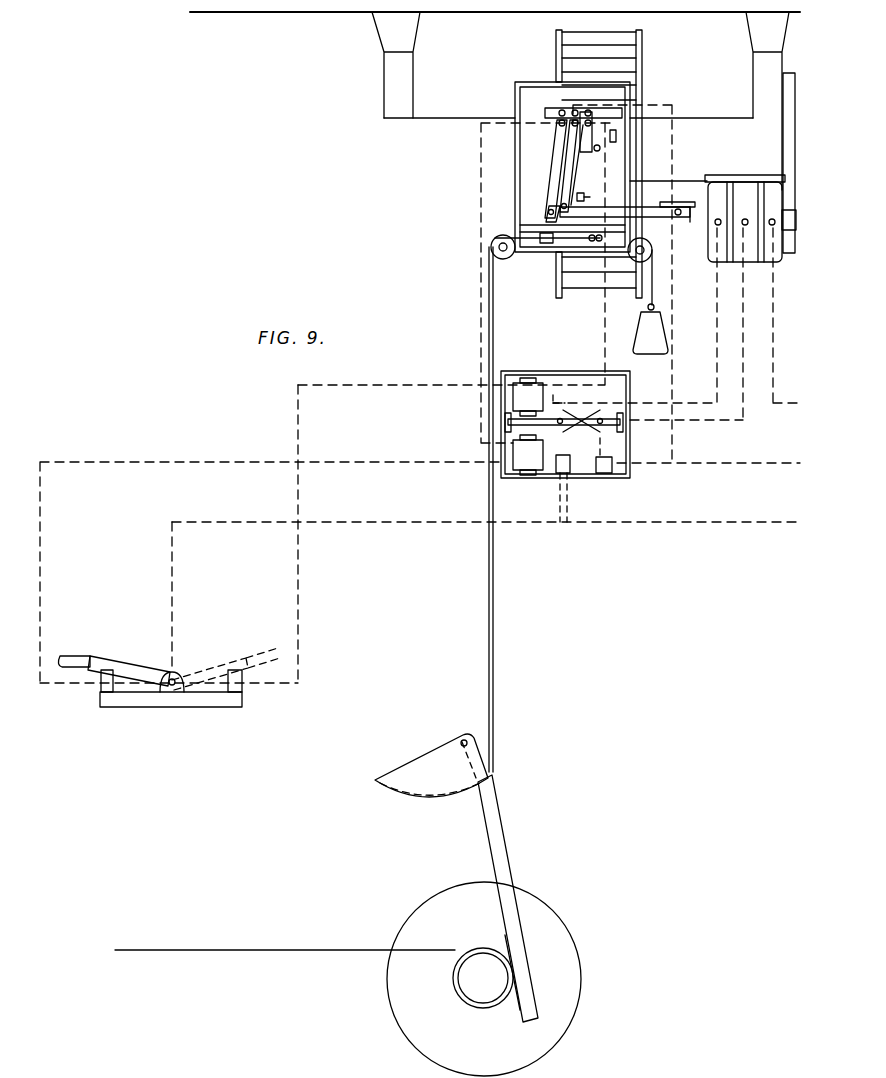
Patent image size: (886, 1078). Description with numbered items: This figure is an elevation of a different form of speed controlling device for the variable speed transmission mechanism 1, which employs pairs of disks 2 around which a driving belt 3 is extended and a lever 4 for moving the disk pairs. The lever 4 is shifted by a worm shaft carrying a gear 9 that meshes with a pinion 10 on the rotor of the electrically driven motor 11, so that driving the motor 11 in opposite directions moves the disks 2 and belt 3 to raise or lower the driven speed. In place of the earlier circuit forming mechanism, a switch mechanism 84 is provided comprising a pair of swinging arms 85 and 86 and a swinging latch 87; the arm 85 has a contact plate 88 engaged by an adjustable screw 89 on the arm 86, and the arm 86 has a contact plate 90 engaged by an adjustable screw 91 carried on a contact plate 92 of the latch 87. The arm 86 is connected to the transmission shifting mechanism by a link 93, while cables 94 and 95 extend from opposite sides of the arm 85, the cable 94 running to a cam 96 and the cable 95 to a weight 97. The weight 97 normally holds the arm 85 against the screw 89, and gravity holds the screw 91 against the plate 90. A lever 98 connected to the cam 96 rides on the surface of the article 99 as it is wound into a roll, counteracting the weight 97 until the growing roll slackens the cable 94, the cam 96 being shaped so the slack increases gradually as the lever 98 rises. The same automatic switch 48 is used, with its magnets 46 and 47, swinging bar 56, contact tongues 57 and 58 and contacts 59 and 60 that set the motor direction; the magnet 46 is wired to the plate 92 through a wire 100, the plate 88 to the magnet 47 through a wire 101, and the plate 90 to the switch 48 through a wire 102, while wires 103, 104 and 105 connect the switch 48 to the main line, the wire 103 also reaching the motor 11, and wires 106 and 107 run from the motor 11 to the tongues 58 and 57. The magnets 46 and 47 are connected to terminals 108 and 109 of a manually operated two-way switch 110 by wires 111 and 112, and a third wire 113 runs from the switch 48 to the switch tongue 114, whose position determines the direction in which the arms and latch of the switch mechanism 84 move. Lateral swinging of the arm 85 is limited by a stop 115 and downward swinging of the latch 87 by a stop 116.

The variable speed transmission mechanism 1 is at (708, 130).
The disks 2 is at (642, 60).
The driving belt 3 is at (582, 48).
The lever 4 is at (688, 219).
The gear 9 is at (790, 97).
The pinion 10 is at (794, 220).
The motor 11 is at (747, 188).
The magnet 46 is at (530, 390).
The magnet 47 is at (540, 474).
The automatic switch 48 is at (590, 476).
The swinging bar 56 is at (546, 428).
The contact tongue 57 is at (604, 420).
The contact tongue 58 is at (572, 418).
The contacts 59 is at (574, 407).
The contacts 60 is at (574, 432).
The switch mechanism 84 is at (533, 104).
The swinging arm 85 is at (550, 218).
The swinging arm 86 is at (568, 164).
The swinging latch 87 is at (600, 126).
The contact plate 88 is at (552, 182).
The adjustable screw 89 is at (590, 191).
The contact plate 90 is at (575, 152).
The adjustable screw 91 is at (598, 152).
The contact plate 92 is at (590, 142).
The link 93 is at (658, 216).
The cable 94 is at (492, 657).
The cable 95 is at (653, 280).
The cam 96 is at (446, 750).
The weight 97 is at (650, 329).
The lever 98 is at (498, 856).
The article 99 is at (438, 956).
The wire 100 is at (604, 310).
The wire 101 is at (480, 328).
The wire 102 is at (673, 279).
The wire 103 is at (774, 376).
The wire 104 is at (786, 466).
The wire 105 is at (782, 514).
The wire 106 is at (717, 345).
The wire 107 is at (743, 390).
The terminal 108 is at (236, 686).
The terminal 109 is at (104, 688).
The two-way switch 110 is at (198, 708).
The wire 111 is at (300, 576).
The wire 112 is at (42, 588).
The wire 113 is at (242, 522).
The switch tongue 114 is at (138, 664).
The stop 115 is at (588, 238).
The stop 116 is at (616, 134).